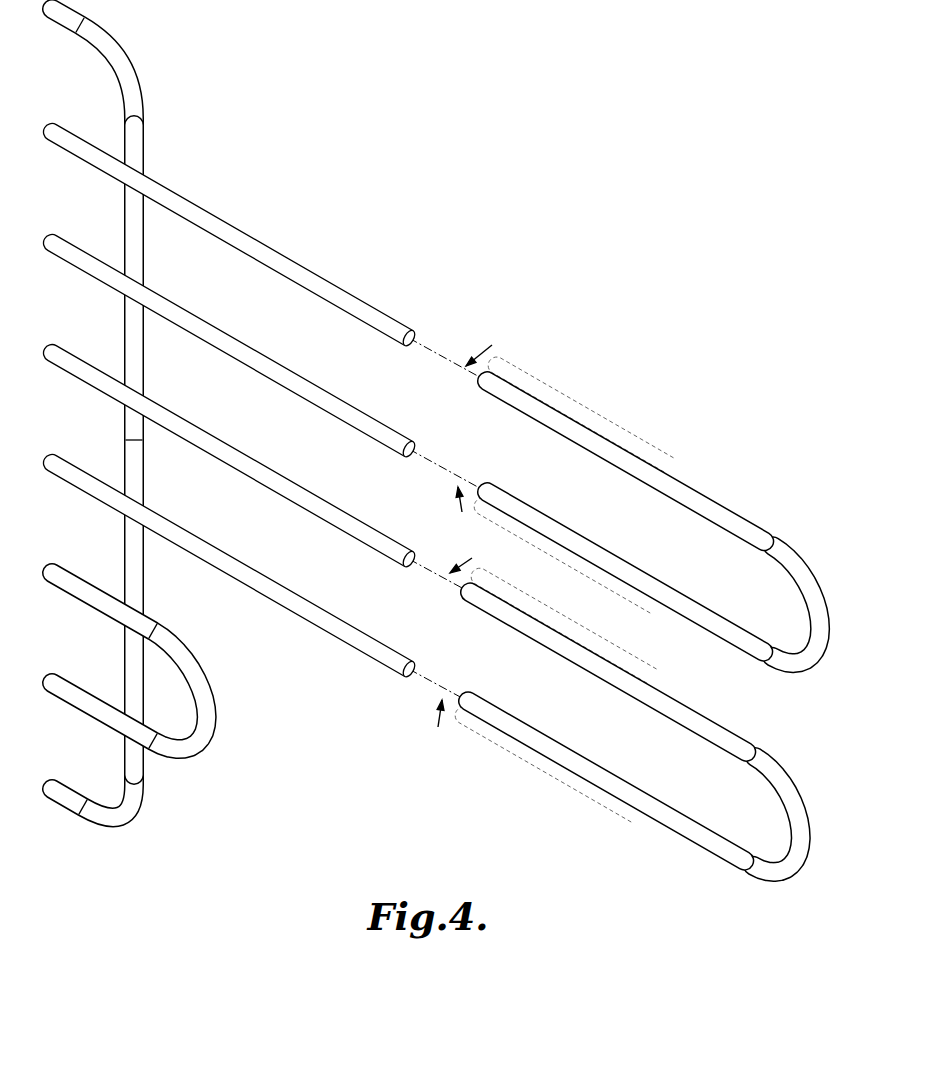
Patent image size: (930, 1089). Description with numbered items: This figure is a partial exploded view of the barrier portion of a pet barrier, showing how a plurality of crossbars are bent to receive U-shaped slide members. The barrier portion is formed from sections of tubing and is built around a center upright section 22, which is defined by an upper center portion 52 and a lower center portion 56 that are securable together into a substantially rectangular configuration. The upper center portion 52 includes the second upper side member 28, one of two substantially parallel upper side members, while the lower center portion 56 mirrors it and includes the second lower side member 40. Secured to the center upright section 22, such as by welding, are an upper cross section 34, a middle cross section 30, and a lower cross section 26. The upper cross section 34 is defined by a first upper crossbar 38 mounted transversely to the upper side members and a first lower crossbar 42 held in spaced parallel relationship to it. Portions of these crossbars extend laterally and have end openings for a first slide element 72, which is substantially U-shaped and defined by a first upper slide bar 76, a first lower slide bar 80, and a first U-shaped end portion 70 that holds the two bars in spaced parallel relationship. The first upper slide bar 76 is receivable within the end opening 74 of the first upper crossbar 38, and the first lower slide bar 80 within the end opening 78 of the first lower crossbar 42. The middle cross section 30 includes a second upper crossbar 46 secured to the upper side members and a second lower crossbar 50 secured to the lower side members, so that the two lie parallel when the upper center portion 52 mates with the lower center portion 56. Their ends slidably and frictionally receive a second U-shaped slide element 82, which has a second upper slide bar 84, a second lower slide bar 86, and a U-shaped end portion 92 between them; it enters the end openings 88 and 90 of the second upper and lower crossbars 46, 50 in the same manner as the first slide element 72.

The center upright section 22 is at (147, 57).
The upper center portion 52 is at (203, 82).
The second upper side member 28 is at (165, 434).
The first upper crossbar 38 is at (246, 241).
The first lower crossbar 42 is at (238, 352).
The second upper crossbar 46 is at (230, 455).
The second lower crossbar 50 is at (222, 563).
The end opening 74 is at (410, 344).
The end opening 78 is at (415, 450).
The end opening 88 is at (410, 566).
The end opening 90 is at (415, 672).
The upper cross section 34 is at (493, 312).
The first upper slide bar 76 is at (629, 465).
The first lower slide bar 80 is at (621, 570).
The second upper slide bar 84 is at (606, 673).
The second lower slide bar 86 is at (606, 785).
The first slide element 72 is at (659, 522).
The first U-shaped end portion 70 is at (817, 606).
The U-shaped end portion 92 is at (791, 794).
The second U-shaped slide element 82 is at (646, 771).
The lower cross section 26 is at (210, 768).
The second lower side member 40 is at (133, 582).
The lower center portion 56 is at (160, 806).
The middle cross section 30 is at (429, 735).